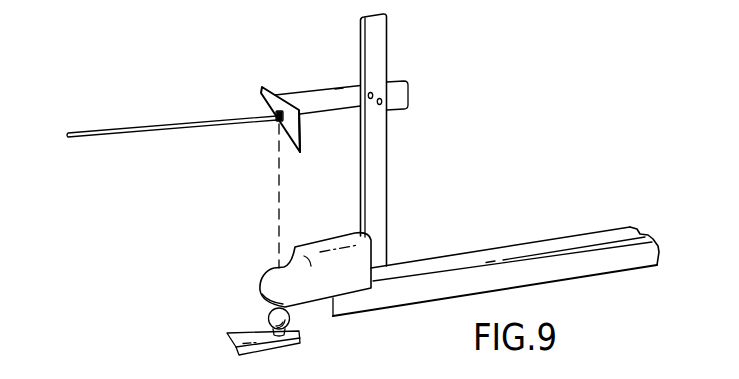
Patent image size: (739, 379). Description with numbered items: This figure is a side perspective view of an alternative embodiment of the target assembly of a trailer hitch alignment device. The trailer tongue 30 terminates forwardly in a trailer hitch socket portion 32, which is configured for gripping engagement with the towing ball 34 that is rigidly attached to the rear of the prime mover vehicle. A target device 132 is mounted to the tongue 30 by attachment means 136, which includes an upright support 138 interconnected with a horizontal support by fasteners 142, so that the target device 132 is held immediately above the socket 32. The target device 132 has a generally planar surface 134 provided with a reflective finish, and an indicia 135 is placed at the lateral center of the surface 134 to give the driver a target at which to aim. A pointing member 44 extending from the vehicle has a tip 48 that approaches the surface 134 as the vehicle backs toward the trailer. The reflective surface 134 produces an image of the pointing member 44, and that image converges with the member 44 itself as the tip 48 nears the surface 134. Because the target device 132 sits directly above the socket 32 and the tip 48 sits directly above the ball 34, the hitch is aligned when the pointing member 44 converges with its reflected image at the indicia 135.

The tongue 30 is at (502, 250).
The trailer hitch socket portion 32 is at (278, 276).
The towing ball 34 is at (288, 309).
The pointing member 44 is at (162, 128).
The tip 48 is at (276, 114).
The target device 132 is at (265, 86).
The planar surface 134 is at (277, 122).
The indicia 135 is at (299, 152).
The attachment means 136 is at (388, 170).
The upright support 138 is at (384, 215).
The fasteners 142 is at (380, 104).